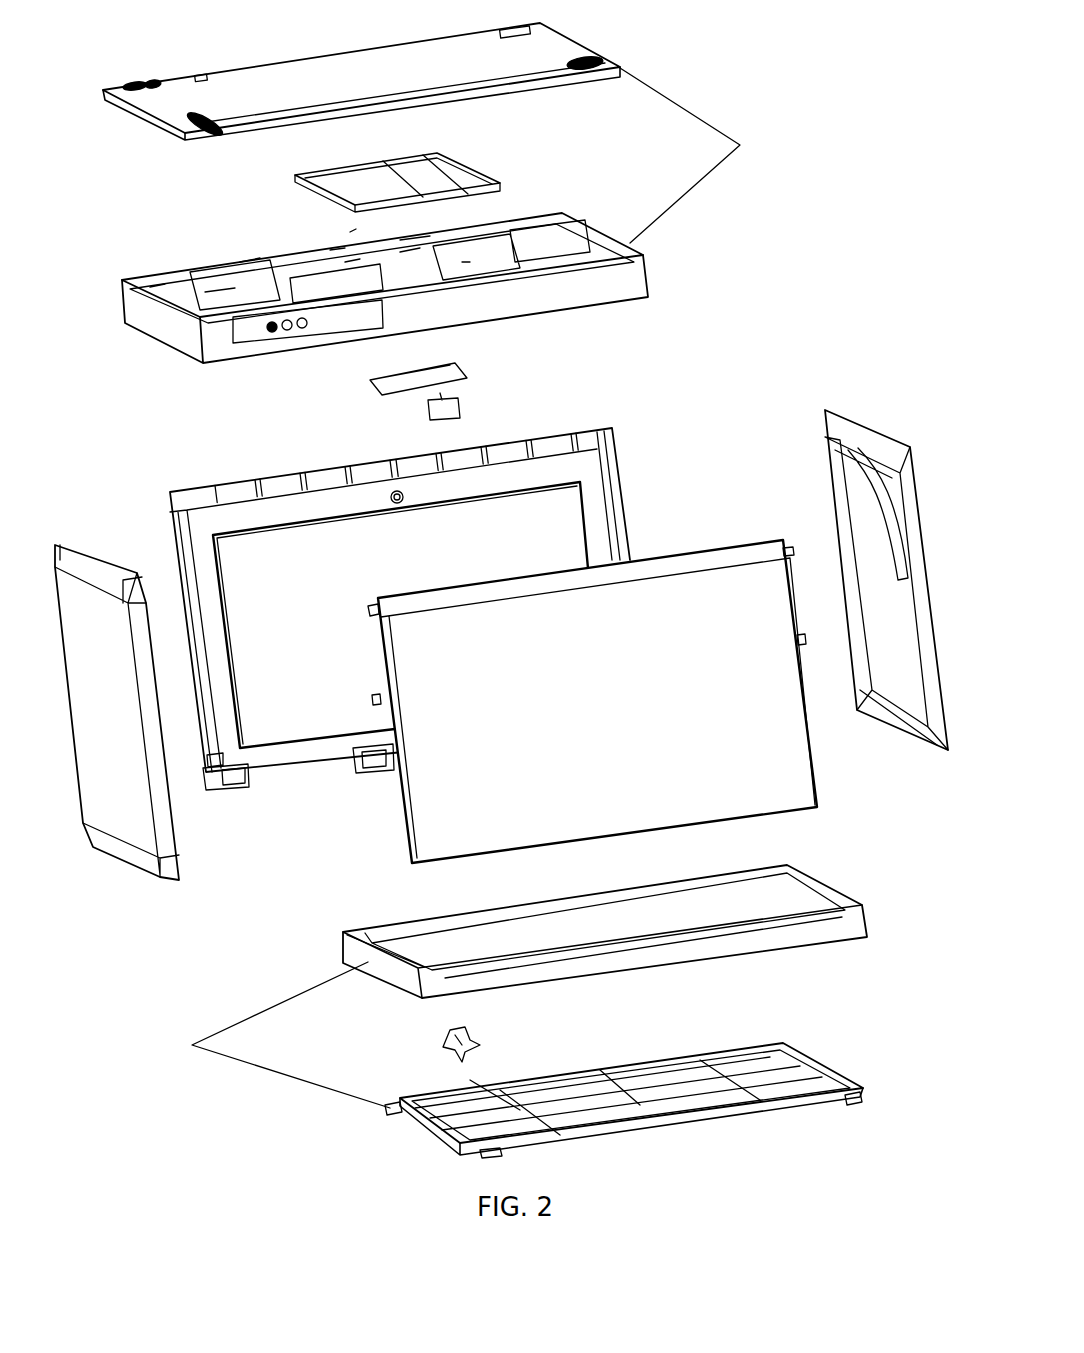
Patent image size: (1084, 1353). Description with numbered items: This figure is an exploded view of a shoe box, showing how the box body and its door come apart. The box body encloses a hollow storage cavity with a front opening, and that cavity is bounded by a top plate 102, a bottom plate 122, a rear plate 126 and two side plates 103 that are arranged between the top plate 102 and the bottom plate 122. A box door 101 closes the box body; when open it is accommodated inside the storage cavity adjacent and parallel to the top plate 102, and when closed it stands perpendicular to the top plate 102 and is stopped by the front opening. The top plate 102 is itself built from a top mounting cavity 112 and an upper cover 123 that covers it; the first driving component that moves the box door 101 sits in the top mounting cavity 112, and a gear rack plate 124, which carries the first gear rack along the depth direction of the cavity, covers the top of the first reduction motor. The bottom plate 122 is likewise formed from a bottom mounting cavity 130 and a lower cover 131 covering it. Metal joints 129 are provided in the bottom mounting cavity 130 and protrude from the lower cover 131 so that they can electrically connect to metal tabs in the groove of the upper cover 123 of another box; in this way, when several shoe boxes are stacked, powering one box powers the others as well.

The box door 101 is at (443, 785).
The top plate 102 is at (706, 155).
The side plates 103 is at (128, 805).
The top mounting cavity 112 is at (143, 310).
The bottom plate 122 is at (262, 1035).
The upper cover 123 is at (148, 110).
The gear rack plate 124 is at (455, 170).
The rear plate 126 is at (257, 517).
The metal joints 129 is at (478, 1047).
The bottom mounting cavity 130 is at (800, 907).
The lower cover 131 is at (827, 1057).